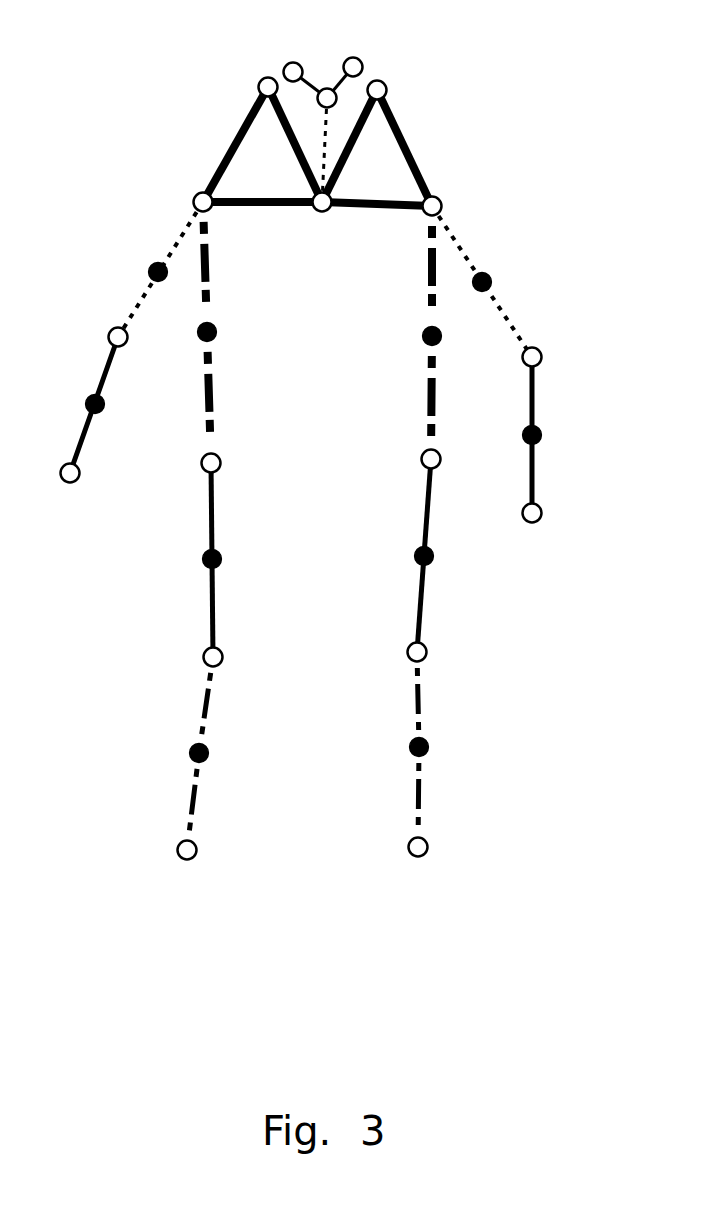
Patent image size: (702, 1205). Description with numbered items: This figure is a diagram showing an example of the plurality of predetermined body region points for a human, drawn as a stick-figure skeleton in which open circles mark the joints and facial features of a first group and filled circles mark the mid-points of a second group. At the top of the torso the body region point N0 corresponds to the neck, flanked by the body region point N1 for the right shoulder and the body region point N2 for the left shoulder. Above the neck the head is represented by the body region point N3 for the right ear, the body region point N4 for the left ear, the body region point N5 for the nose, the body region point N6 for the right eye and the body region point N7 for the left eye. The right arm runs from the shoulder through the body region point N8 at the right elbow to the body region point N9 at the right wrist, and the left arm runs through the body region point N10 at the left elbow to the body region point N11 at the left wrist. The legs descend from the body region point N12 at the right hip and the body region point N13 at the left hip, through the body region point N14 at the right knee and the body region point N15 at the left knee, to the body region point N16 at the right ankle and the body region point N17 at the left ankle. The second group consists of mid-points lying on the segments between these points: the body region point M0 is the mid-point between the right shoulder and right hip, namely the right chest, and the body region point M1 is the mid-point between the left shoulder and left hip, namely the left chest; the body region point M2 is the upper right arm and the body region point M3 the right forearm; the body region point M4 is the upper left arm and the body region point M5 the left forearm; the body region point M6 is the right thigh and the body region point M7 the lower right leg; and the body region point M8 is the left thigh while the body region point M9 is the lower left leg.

The body region point N0 is at (322, 225).
The body region point N1 is at (190, 188).
The body region point N2 is at (451, 190).
The body region point N3 is at (250, 90).
The body region point N4 is at (397, 90).
The body region point N5 is at (315, 116).
The body region point N6 is at (293, 49).
The body region point N7 is at (364, 46).
The body region point N8 is at (103, 324).
The body region point N9 is at (52, 473).
The body region point N10 is at (559, 361).
The body region point N11 is at (559, 516).
The body region point N12 is at (237, 468).
The body region point N13 is at (404, 463).
The body region point N14 is at (239, 663).
The body region point N15 is at (395, 659).
The body region point N16 is at (214, 856).
The body region point N17 is at (396, 854).
The body region point M0 is at (229, 338).
The body region point M1 is at (412, 340).
The body region point M2 is at (142, 257).
The body region point M3 is at (81, 391).
The body region point M4 is at (503, 286).
The body region point M5 is at (554, 440).
The body region point M6 is at (232, 565).
The body region point M7 is at (220, 758).
The body region point M8 is at (408, 561).
The body region point M9 is at (402, 751).